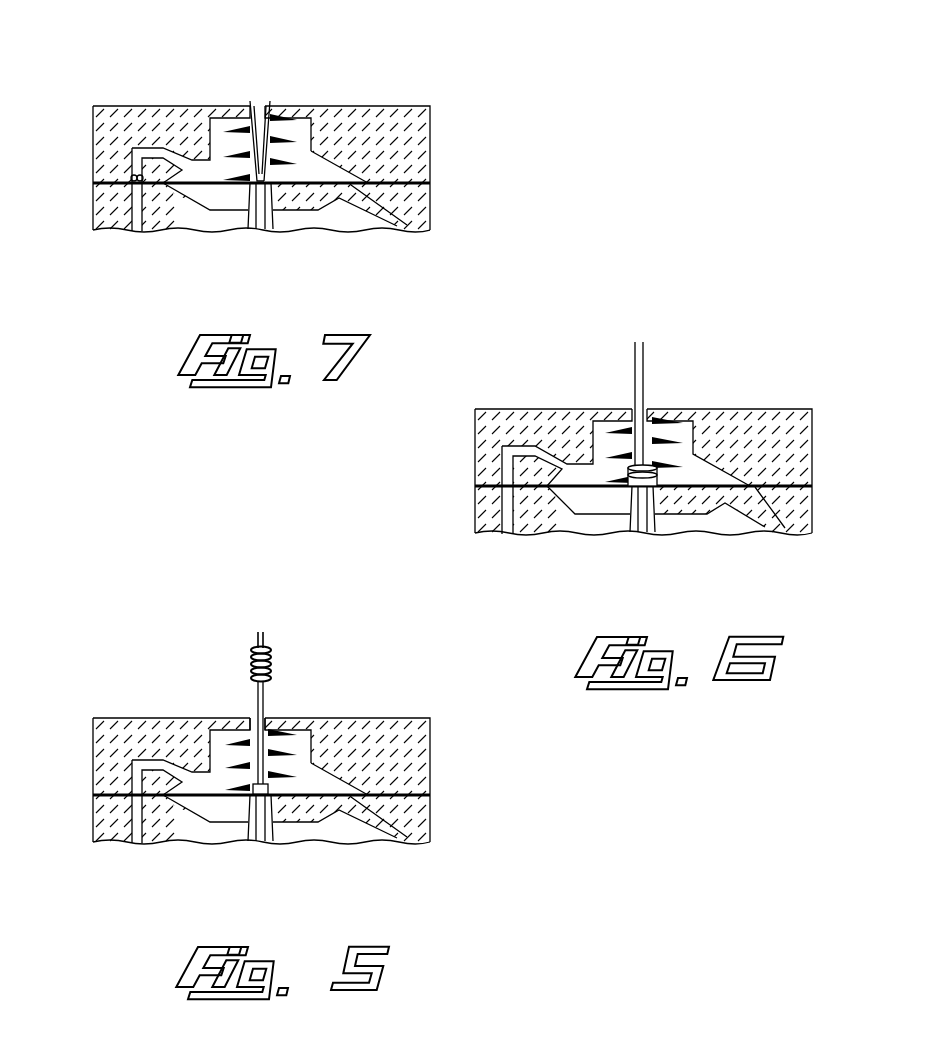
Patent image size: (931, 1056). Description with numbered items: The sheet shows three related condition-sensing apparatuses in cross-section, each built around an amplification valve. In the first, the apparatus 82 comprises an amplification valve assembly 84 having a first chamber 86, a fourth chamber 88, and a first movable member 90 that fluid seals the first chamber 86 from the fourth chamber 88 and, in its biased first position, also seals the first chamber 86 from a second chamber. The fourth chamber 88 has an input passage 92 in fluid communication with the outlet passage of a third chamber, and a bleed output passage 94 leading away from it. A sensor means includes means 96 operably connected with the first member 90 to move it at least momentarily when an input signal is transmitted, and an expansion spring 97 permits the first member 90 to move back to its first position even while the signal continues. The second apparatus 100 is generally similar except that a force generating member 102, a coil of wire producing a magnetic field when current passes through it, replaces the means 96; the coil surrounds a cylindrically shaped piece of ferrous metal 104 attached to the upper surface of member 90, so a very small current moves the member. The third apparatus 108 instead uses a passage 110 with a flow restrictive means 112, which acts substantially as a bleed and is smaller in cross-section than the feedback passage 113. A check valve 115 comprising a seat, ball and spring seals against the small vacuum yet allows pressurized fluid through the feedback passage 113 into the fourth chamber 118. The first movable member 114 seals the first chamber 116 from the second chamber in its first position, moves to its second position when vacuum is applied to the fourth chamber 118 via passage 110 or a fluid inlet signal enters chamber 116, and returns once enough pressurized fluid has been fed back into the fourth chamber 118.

In FIG. 5, the apparatus 82 is at (375, 700).
In FIG. 5, the amplification valve assembly 84 is at (433, 748).
In FIG. 5, the first chamber 86 is at (210, 825).
In FIG. 5, the fourth chamber 88 is at (325, 775).
In FIG. 6, the first movable member 90 is at (800, 485).
In FIG. 5, the first movable member 90 is at (432, 812).
In FIG. 5, the input passage 92 is at (135, 773).
In FIG. 5, the bleed output passage 94 is at (255, 717).
In FIG. 5, the means 96 is at (265, 700).
In FIG. 5, the expansion spring 97 is at (272, 672).
In FIG. 6, the apparatus 100 is at (757, 388).
In FIG. 6, the force generating member 102 is at (645, 378).
In FIG. 6, the cylindrically shaped piece of ferrous metal 104 is at (635, 480).
In FIG. 7, the apparatus 108 is at (380, 83).
In FIG. 7, the passage 110 is at (261, 106).
In FIG. 7, the flow restrictive means 112 is at (268, 106).
In FIG. 7, the feedback passage 113 is at (137, 231).
In FIG. 7, the first movable member 114 is at (428, 183).
In FIG. 7, the check valve 115 is at (130, 178).
In FIG. 7, the first chamber 116 is at (217, 213).
In FIG. 7, the fourth chamber 118 is at (316, 166).